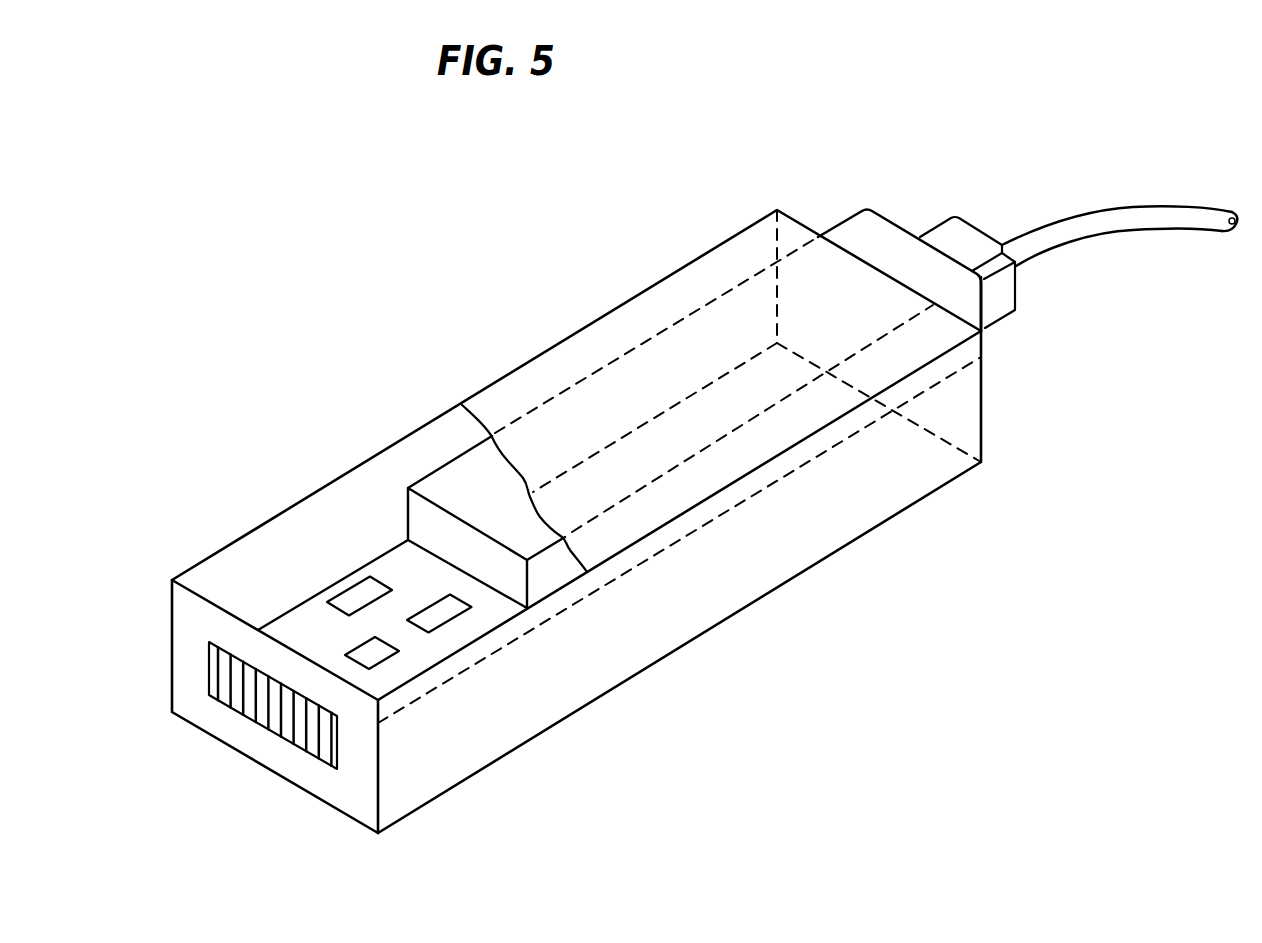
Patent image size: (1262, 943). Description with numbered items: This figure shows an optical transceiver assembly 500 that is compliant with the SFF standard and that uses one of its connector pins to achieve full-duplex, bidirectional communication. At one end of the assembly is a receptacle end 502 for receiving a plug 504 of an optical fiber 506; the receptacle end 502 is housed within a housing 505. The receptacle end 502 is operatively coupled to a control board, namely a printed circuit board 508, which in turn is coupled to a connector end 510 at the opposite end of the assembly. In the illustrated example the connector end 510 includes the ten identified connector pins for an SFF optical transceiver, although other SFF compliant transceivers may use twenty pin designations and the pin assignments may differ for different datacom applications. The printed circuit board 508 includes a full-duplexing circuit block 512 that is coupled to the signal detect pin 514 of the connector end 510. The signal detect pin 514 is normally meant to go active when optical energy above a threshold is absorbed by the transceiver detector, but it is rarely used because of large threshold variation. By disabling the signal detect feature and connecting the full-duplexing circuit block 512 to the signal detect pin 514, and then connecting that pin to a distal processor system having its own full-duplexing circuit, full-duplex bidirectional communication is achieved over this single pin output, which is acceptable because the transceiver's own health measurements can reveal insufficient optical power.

The optical transceiver assembly 500 is at (704, 522).
The receptacle end 502 is at (718, 325).
The plug 504 is at (1000, 292).
The housing 505 is at (917, 473).
The optical fiber 506 is at (1172, 218).
The printed circuit board 508 is at (305, 617).
The connector end 510 is at (333, 767).
The full-duplexing circuit block 512 is at (437, 613).
The signal detect pin 514 is at (270, 710).